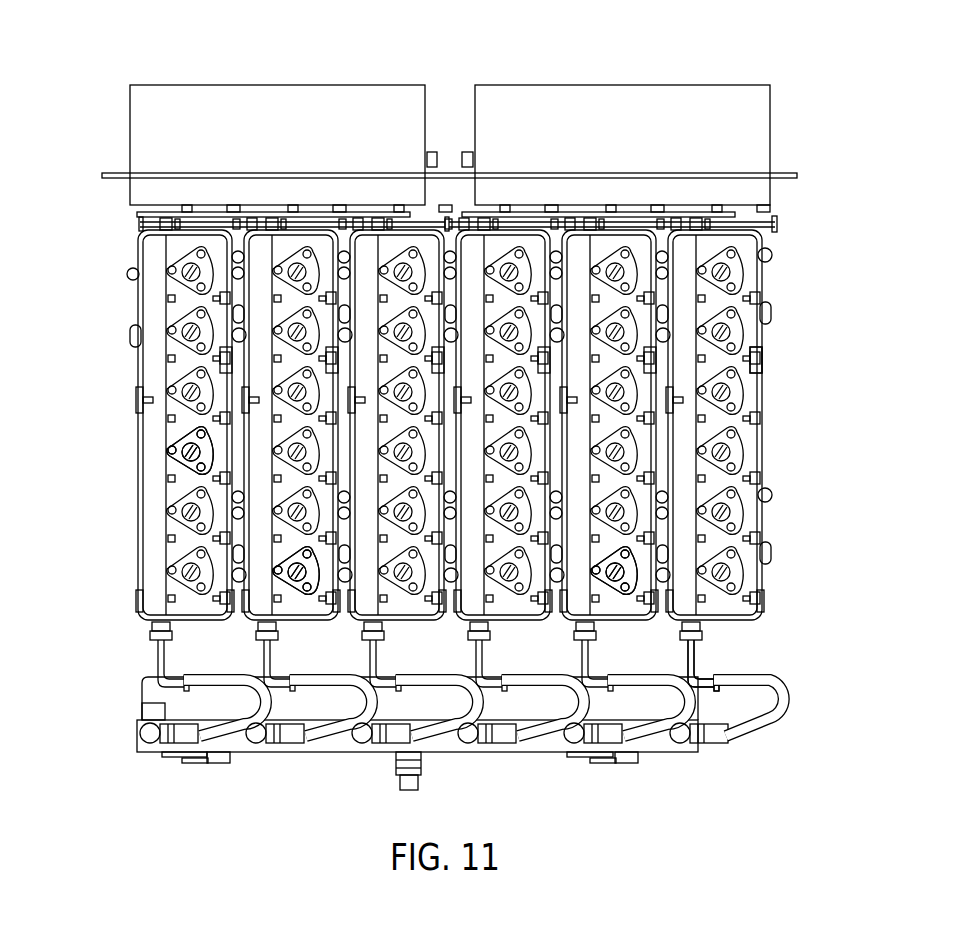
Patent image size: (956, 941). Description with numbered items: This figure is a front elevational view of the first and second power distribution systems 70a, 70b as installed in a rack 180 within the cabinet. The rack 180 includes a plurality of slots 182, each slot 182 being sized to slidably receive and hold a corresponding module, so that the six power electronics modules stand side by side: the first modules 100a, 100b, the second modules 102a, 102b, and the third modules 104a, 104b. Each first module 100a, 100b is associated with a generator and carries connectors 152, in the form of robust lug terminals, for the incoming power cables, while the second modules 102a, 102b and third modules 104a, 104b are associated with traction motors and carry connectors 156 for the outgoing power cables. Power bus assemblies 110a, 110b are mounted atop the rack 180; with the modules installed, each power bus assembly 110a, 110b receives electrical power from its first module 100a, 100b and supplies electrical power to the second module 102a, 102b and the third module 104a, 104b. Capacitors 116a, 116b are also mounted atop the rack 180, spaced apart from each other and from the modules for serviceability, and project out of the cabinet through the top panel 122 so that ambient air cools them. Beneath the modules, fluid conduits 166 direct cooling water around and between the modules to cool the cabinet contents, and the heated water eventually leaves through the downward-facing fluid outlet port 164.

The first power distribution system 70a is at (564, 432).
The second power distribution system 70b is at (270, 432).
The first module 100a is at (616, 254).
The first module 100b is at (306, 254).
The second module 102a is at (745, 607).
The second module 102b is at (385, 607).
The third module 104a is at (522, 607).
The third module 104b is at (160, 607).
The power bus assembly 110a is at (798, 209).
The power bus assembly 110b is at (112, 208).
The capacitor 116a is at (757, 112).
The capacitor 116b is at (204, 100).
The top panel 122 is at (797, 176).
The connector 152 is at (300, 580).
The connector 156 is at (178, 458).
The fluid outlet port 164 is at (421, 778).
The fluid conduit 166 is at (694, 666).
The rack 180 is at (762, 364).
The slot 182 is at (752, 637).